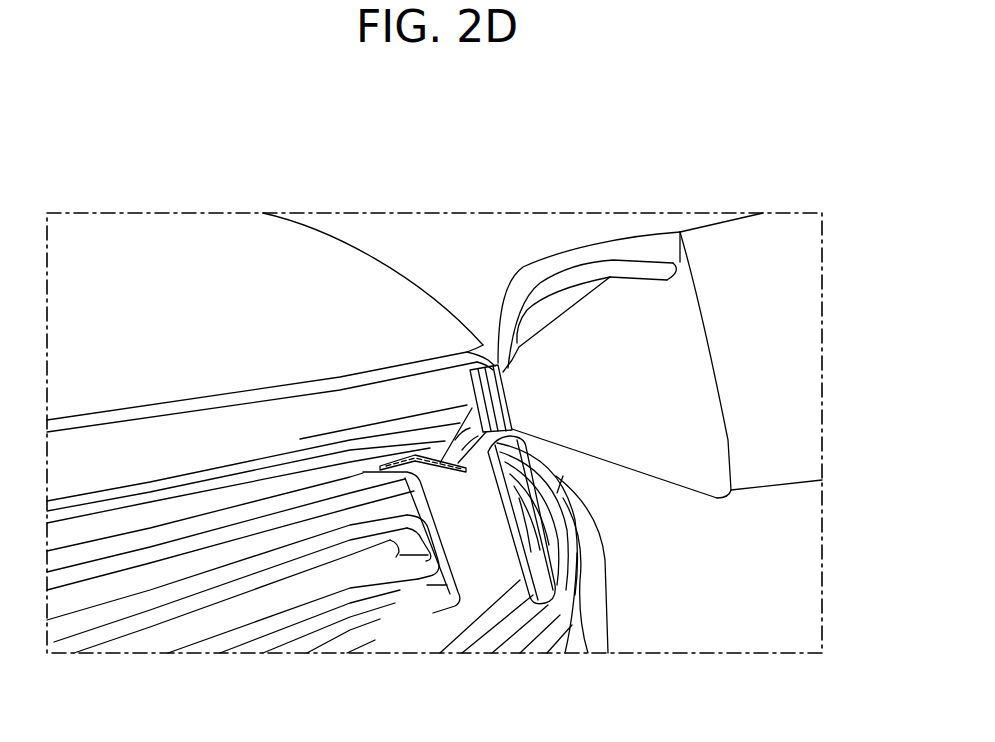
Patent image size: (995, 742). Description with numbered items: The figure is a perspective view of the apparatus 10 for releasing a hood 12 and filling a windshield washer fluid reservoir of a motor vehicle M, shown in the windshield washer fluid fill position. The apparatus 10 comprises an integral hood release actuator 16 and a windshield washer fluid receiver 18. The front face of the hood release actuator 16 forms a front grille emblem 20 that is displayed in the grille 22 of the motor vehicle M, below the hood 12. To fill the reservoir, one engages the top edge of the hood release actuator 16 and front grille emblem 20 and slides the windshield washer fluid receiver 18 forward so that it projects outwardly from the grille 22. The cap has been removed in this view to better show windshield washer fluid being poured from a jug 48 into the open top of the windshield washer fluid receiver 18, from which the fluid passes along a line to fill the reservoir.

The apparatus 10 is at (625, 167).
The hood 12 is at (172, 246).
The hood release actuator 16 is at (510, 564).
The windshield washer fluid receiver 18 is at (465, 548).
The front grille emblem 20 is at (527, 563).
The grille 22 is at (269, 578).
The jug 48 is at (770, 250).
The motor vehicle M is at (442, 249).